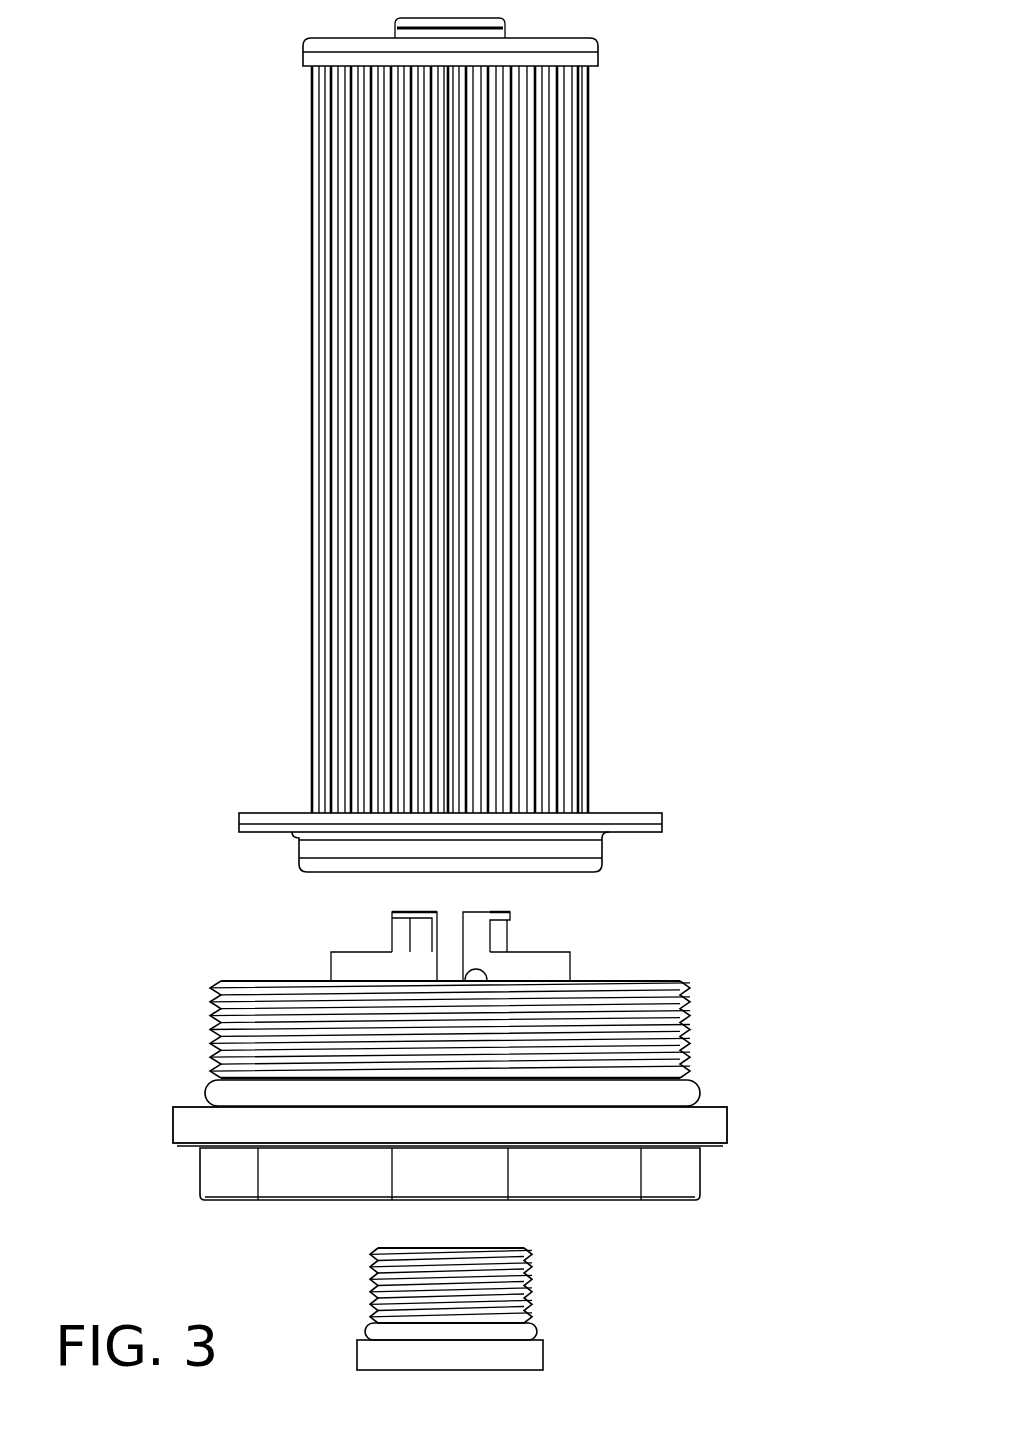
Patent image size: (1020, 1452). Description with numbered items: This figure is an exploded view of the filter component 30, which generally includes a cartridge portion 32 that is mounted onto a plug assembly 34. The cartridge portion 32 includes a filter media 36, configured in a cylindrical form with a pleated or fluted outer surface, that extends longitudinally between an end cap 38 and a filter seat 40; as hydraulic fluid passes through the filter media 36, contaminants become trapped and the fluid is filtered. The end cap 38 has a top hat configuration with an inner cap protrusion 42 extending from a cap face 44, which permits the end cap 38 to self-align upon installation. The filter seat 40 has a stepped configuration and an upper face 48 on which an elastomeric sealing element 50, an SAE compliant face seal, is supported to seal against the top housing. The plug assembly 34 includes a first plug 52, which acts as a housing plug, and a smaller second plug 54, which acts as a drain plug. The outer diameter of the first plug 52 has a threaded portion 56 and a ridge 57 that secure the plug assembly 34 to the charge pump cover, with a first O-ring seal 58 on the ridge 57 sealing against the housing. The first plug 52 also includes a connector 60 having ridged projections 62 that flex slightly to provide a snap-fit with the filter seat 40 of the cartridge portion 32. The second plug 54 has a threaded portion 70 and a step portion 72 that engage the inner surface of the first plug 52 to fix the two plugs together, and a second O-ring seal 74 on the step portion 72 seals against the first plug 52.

The filter component 30 is at (180, 262).
The cartridge portion 32 is at (240, 655).
The plug assembly 34 is at (210, 1225).
The filter media 36 is at (312, 314).
The end cap 38 is at (598, 45).
The filter seat 40 is at (606, 843).
The inner cap protrusion 42 is at (433, 20).
The cap face 44 is at (542, 38).
The upper face 48 is at (238, 828).
The sealing element 50 is at (255, 812).
The first plug 52 is at (235, 980).
The second plug 54 is at (375, 1255).
The threaded portion 56 is at (212, 1000).
The ridge 57 is at (722, 1107).
The first O-ring seal 58 is at (206, 1098).
The connector 60 is at (363, 950).
The ridged projections 62 is at (390, 914).
The threaded portion 70 is at (532, 1288).
The step portion 72 is at (543, 1340).
The second O-ring seal 74 is at (365, 1330).